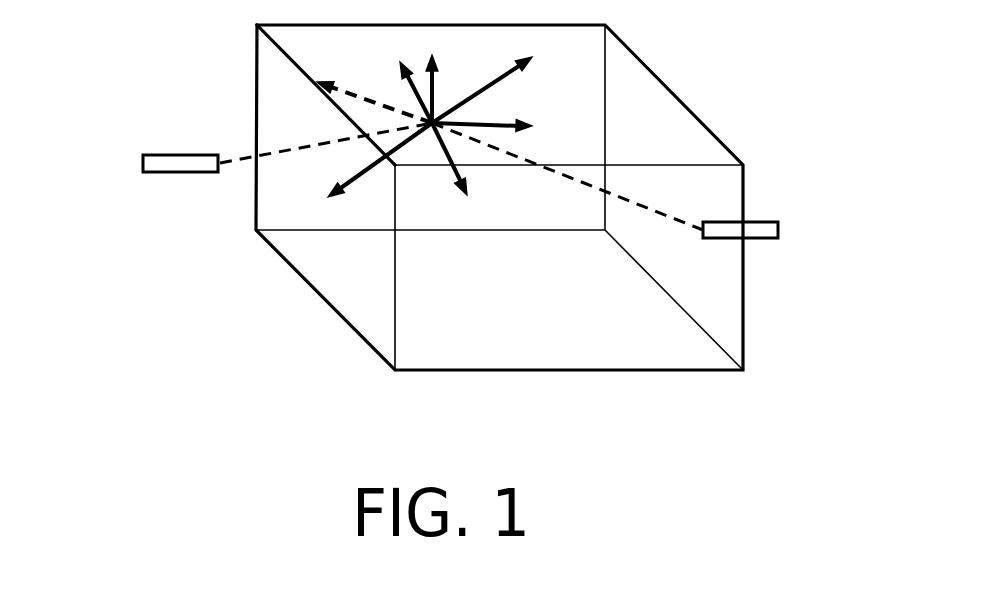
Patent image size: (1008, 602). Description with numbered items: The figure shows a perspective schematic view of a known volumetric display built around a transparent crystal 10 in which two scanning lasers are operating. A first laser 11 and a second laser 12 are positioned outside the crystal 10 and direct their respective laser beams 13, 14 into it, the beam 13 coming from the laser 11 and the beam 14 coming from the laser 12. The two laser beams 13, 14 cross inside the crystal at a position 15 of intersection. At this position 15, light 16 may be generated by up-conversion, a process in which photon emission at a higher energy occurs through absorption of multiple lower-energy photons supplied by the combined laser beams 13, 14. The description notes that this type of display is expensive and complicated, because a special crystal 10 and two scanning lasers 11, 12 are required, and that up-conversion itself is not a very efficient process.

The transparent crystal 10 is at (331, 280).
The laser 11 is at (143, 163).
The laser 12 is at (778, 229).
The laser beam 13 is at (290, 148).
The laser beam 14 is at (625, 197).
The position of intersection 15 is at (438, 112).
The light 16 is at (512, 78).